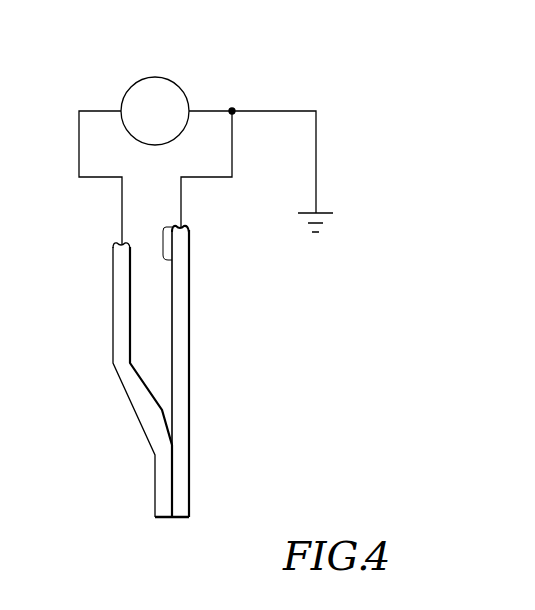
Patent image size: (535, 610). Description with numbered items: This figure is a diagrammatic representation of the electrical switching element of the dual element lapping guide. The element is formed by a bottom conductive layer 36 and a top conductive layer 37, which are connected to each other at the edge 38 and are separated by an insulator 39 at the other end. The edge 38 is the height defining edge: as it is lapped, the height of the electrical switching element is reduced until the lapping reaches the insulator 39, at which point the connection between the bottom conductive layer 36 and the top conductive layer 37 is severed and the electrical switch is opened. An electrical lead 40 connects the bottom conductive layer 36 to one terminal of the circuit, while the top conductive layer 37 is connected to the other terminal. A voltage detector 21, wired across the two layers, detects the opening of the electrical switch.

The voltage detector 21 is at (128, 88).
The bottom conductive layer 36 is at (182, 410).
The top conductive layer 37 is at (140, 400).
The edge 38 is at (179, 518).
The insulator 39 is at (160, 343).
The electrical lead 40 is at (166, 228).